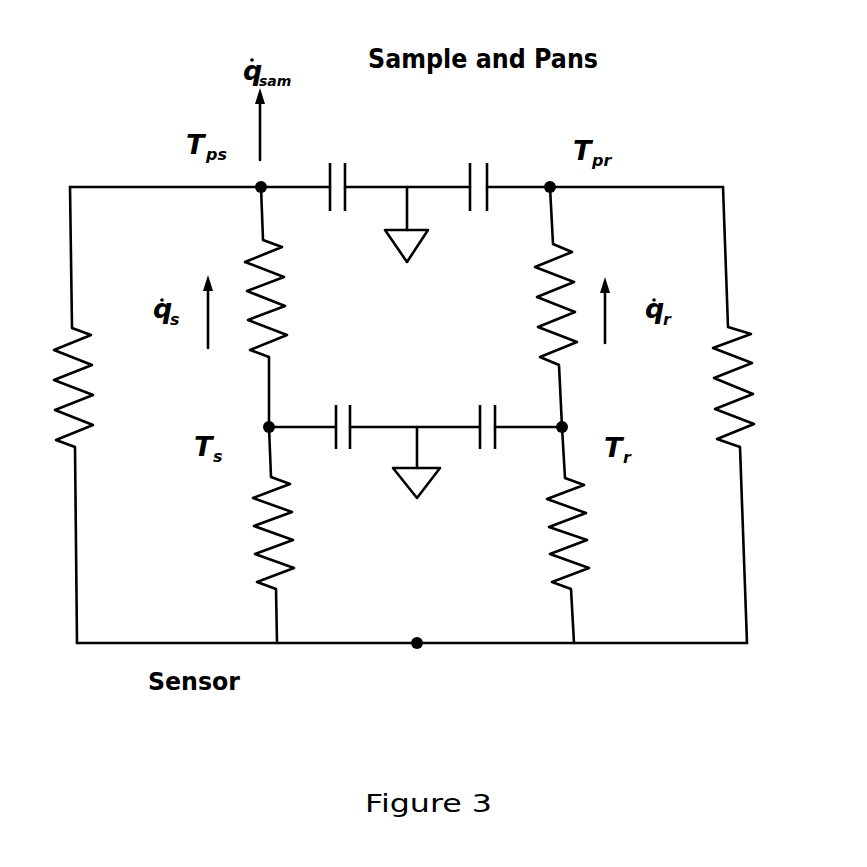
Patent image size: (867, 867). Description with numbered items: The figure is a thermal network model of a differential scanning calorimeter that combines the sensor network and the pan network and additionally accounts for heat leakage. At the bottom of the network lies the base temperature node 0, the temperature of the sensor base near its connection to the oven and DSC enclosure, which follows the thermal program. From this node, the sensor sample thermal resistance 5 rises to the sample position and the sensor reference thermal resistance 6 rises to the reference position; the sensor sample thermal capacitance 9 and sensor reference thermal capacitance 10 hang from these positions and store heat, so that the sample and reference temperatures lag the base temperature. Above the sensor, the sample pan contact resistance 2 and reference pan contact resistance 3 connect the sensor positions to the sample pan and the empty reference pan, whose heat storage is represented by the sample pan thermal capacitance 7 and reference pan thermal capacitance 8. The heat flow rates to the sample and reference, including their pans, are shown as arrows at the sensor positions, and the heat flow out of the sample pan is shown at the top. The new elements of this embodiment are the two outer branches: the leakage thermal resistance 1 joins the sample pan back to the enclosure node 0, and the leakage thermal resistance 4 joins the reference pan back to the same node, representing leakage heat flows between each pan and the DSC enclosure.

The leakage thermal resistance R_ls 1 is at (46, 387).
The sample pan contact resistance R_ps 2 is at (296, 298).
The reference pan contact resistance R_pr 3 is at (524, 304).
The leakage thermal resistance R_lr 4 is at (762, 387).
The sensor sample thermal resistance R_s 5 is at (248, 533).
The sensor reference thermal resistance R_r 6 is at (593, 533).
The sample pan thermal capacitance C_ps 7 is at (342, 166).
The reference pan thermal capacitance C_pr 8 is at (480, 166).
The sensor sample thermal capacitance C_s 9 is at (337, 454).
The sensor reference thermal capacitance C_r 10 is at (488, 454).
The base temperature node T_ 0 is at (423, 670).